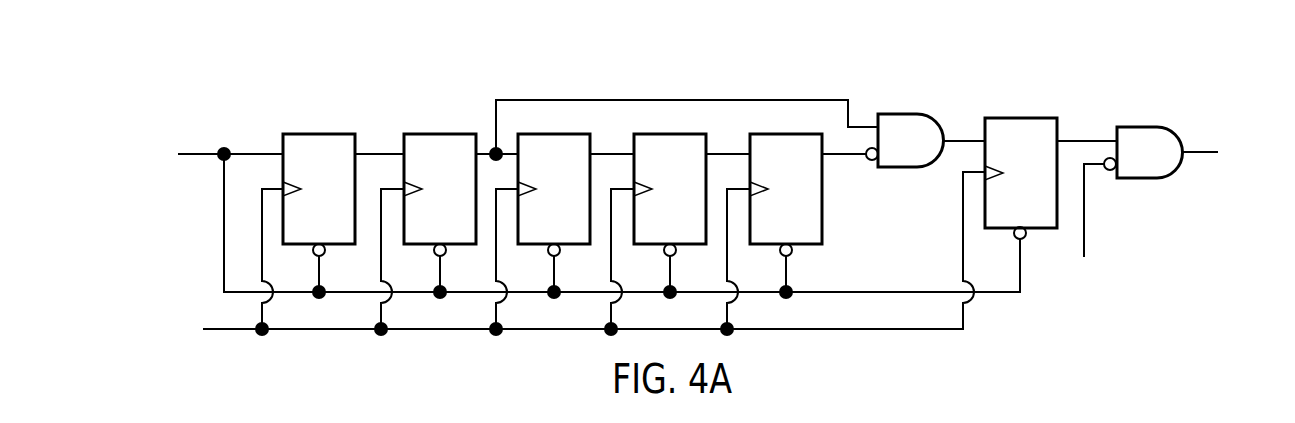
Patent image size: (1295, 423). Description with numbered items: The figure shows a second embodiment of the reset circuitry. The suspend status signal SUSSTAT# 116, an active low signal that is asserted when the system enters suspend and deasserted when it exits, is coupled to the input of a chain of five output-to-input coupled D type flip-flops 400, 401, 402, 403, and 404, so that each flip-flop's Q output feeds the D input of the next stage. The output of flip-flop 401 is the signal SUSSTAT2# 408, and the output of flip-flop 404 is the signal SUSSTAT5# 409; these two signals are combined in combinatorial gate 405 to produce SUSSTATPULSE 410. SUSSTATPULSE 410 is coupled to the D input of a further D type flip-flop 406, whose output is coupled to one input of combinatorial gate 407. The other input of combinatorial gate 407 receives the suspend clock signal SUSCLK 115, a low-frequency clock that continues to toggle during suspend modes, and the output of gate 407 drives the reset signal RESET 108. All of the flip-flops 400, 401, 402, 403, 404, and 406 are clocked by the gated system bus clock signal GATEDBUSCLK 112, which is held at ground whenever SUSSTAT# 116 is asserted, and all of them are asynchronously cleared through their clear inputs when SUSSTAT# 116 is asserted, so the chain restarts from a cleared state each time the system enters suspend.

The D type flip-flop 400 is at (332, 133).
The D type flip-flop 401 is at (449, 133).
The D type flip-flop 402 is at (545, 133).
The D type flip-flop 403 is at (655, 133).
The D type flip-flop 404 is at (770, 133).
The combinatorial gate 405 is at (889, 152).
The D type flip-flop 406 is at (1035, 117).
The combinatorial gate 407 is at (1129, 164).
The SUSSTAT2# signal 408 is at (523, 100).
The SUSSTAT5# signal 409 is at (843, 156).
The SUSSTATPULSE signal 410 is at (958, 139).
The suspend status signal (SUSSTAT#) 116 is at (172, 171).
The gated system bus clock signal (GATEDBUSCLK) 112 is at (149, 345).
The suspend clock signal (SUSCLK) 115 is at (1086, 259).
The RESET signal 108 is at (1237, 164).